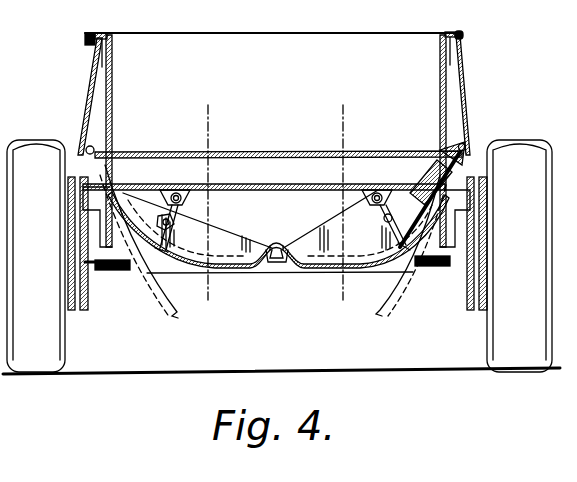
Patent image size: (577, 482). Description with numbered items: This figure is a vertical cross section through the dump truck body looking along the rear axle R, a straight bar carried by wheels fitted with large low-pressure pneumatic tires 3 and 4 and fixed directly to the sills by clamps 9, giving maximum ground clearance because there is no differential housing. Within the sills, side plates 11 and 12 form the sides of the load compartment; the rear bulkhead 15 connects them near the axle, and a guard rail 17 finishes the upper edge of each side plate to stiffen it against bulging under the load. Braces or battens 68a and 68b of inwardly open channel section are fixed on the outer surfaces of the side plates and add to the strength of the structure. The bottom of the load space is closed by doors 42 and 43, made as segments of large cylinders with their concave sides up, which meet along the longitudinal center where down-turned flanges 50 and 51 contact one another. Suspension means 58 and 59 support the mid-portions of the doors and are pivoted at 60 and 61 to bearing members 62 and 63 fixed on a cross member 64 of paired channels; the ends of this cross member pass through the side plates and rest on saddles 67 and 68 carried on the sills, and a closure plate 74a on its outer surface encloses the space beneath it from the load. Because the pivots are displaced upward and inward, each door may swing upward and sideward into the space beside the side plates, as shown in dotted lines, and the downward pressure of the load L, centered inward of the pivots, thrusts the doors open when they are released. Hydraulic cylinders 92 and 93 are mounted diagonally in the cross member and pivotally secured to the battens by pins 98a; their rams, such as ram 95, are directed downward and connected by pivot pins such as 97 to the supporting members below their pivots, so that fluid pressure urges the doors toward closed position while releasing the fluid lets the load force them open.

The pneumatic tire 3 is at (514, 146).
The pneumatic tire 4 is at (35, 152).
The clamp 9 is at (112, 271).
The side plate 11 is at (447, 72).
The side plate 12 is at (103, 75).
The rear bulkhead 15 is at (263, 105).
The guard rail 17 is at (100, 46).
The door 42 is at (345, 273).
The door 43 is at (211, 270).
The down-turned flange 50 is at (284, 258).
The down-turned flange 51 is at (270, 258).
The suspension means 58 is at (336, 228).
The suspension means 59 is at (258, 228).
The pivot 60 is at (372, 190).
The pivot 61 is at (177, 191).
The bearing member 62 is at (393, 194).
The bearing member 63 is at (187, 195).
The cross member 64 is at (272, 154).
The saddle 67 is at (471, 192).
The saddle 68 is at (97, 203).
The brace or batten 68a is at (455, 117).
The brace or batten 68b is at (97, 103).
The closure plate 74a is at (262, 229).
The cylinder 92 is at (440, 150).
The cylinder 93 is at (175, 219).
The ram 95 is at (430, 178).
The pivot pin 97 is at (384, 224).
The pin 98a is at (466, 147).
The load L is at (205, 112).
The rear axle R is at (418, 272).